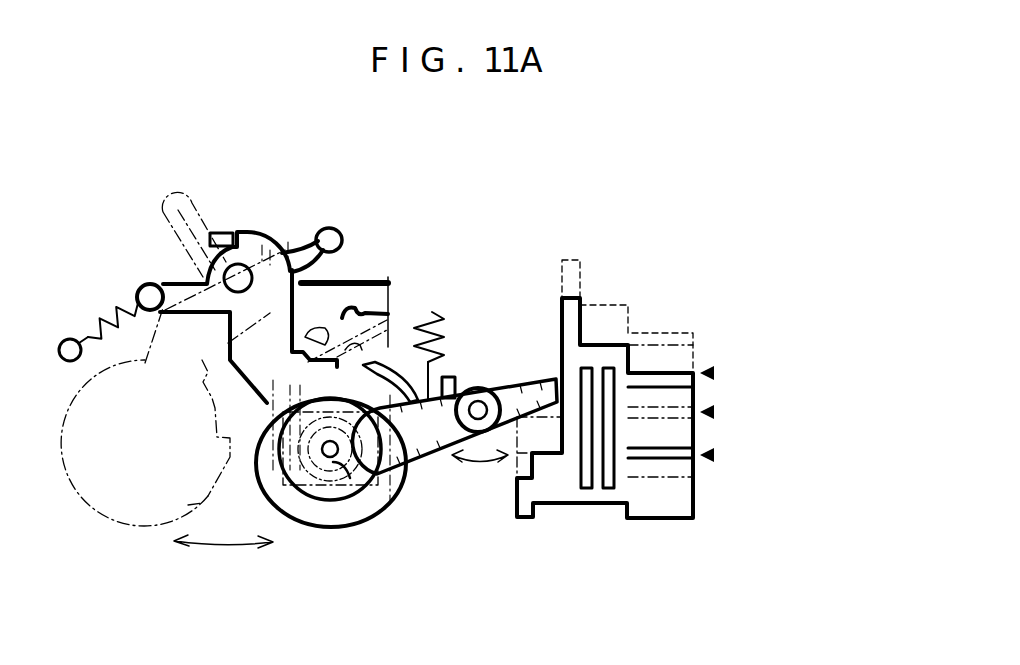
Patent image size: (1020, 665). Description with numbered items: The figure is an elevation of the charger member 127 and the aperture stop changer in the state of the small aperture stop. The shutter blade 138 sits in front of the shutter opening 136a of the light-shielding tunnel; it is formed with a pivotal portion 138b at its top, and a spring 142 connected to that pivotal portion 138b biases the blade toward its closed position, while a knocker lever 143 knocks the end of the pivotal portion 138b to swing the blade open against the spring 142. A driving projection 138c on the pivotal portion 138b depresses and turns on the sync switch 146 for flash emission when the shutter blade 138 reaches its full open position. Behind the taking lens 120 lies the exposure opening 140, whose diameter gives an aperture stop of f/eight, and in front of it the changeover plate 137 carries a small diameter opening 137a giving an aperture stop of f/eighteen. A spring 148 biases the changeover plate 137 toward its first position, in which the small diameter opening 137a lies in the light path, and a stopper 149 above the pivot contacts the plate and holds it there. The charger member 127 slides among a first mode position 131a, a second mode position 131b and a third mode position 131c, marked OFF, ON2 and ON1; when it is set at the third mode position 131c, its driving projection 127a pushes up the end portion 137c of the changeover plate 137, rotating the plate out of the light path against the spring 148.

The taking lens 120 is at (262, 480).
The charger member 127 is at (660, 541).
The driving projection 127a is at (518, 503).
The first mode position 131a is at (745, 488).
The second mode position 131b is at (793, 403).
The third mode position 131c is at (735, 346).
The shutter opening 136a is at (300, 512).
The changeover plate 137 is at (482, 366).
The small diameter opening 137a is at (372, 492).
The end portion 137c is at (528, 382).
The shutter blade 138 is at (84, 527).
The pivotal portion 138b is at (260, 230).
The driving projection 138c is at (334, 228).
The exposure opening 140 is at (358, 522).
The spring 142 is at (88, 318).
The knocker lever 143 is at (218, 232).
The sync switch 146 is at (359, 258).
The spring 148 is at (418, 308).
The stopper 149 is at (429, 302).